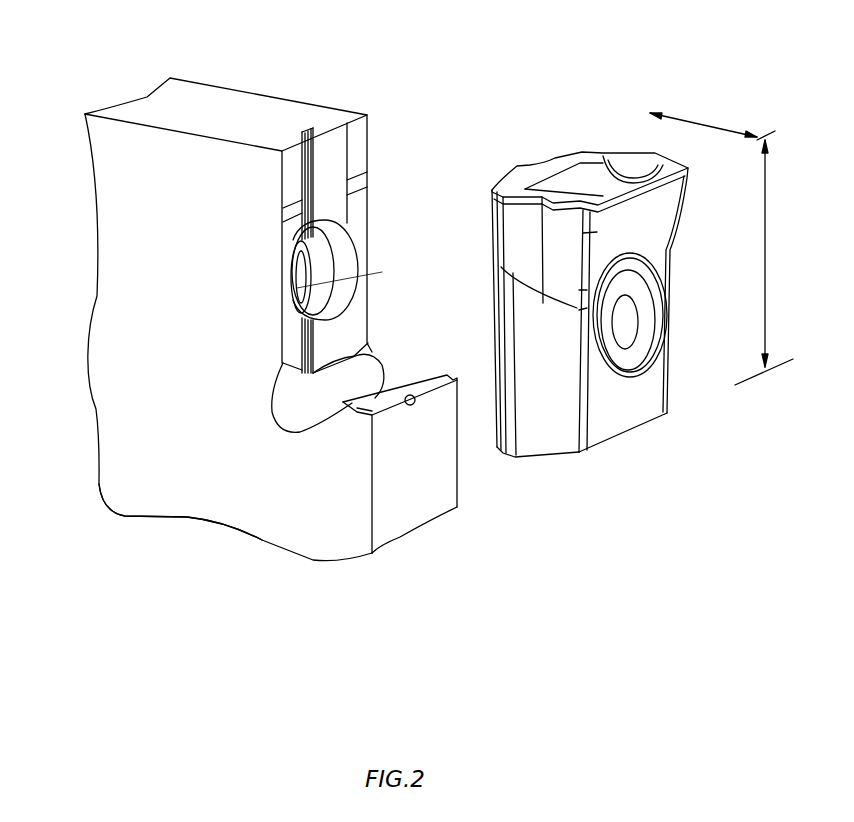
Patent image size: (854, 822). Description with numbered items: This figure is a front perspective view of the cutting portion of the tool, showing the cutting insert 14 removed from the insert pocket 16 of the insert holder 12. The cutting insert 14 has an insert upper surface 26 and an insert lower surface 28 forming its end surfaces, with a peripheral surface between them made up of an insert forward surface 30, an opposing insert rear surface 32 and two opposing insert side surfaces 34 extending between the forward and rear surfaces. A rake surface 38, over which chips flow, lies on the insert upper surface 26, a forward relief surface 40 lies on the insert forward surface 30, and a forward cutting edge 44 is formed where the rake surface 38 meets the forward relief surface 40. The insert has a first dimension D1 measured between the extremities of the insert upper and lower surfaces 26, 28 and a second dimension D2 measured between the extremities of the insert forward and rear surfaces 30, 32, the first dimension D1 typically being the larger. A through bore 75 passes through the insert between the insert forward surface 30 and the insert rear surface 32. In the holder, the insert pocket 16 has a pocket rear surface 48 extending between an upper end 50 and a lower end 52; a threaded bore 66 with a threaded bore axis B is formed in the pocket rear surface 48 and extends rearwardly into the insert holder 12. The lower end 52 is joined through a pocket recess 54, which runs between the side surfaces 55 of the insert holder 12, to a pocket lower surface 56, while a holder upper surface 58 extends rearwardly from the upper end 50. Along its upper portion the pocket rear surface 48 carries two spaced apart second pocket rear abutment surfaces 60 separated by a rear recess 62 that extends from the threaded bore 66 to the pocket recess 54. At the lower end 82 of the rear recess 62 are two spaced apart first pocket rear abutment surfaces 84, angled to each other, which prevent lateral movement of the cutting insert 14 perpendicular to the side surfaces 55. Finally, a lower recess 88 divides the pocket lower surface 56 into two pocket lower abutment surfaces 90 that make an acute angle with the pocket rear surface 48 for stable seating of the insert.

The insert holder 12 is at (179, 82).
The cutting insert 14 is at (592, 88).
The insert pocket 16 is at (408, 202).
The insert upper surface 26 is at (597, 160).
The insert lower surface 28 is at (563, 488).
The insert forward surface 30 is at (642, 418).
The insert rear surface 32 is at (532, 135).
The insert side surfaces 34 is at (533, 443).
The rake surface 38 is at (610, 188).
The forward relief surface 40 is at (660, 192).
The forward cutting edge 44 is at (688, 183).
The pocket rear surface 48 is at (409, 167).
The upper end of the pocket rear surface 50 is at (381, 98).
The lower end of the pocket rear surface 52 is at (395, 335).
The pocket recess 54 is at (283, 410).
The insert holder side surfaces 55 is at (267, 503).
The pocket lower surface 56 is at (411, 350).
The holder upper surface 58 is at (228, 105).
The second pocket rear abutment surfaces 60 is at (355, 142).
The rear recess 62 is at (335, 140).
The threaded bore 66 is at (310, 258).
The through bore 75 is at (600, 312).
The lower end of the rear recess 82 is at (285, 364).
The first pocket rear abutment surfaces 84 is at (332, 335).
The lower recess 88 is at (410, 402).
The pocket lower abutment surfaces 90 is at (420, 380).
The threaded bore axis B is at (377, 277).
The first dimension D1 is at (768, 262).
The second dimension D2 is at (712, 115).